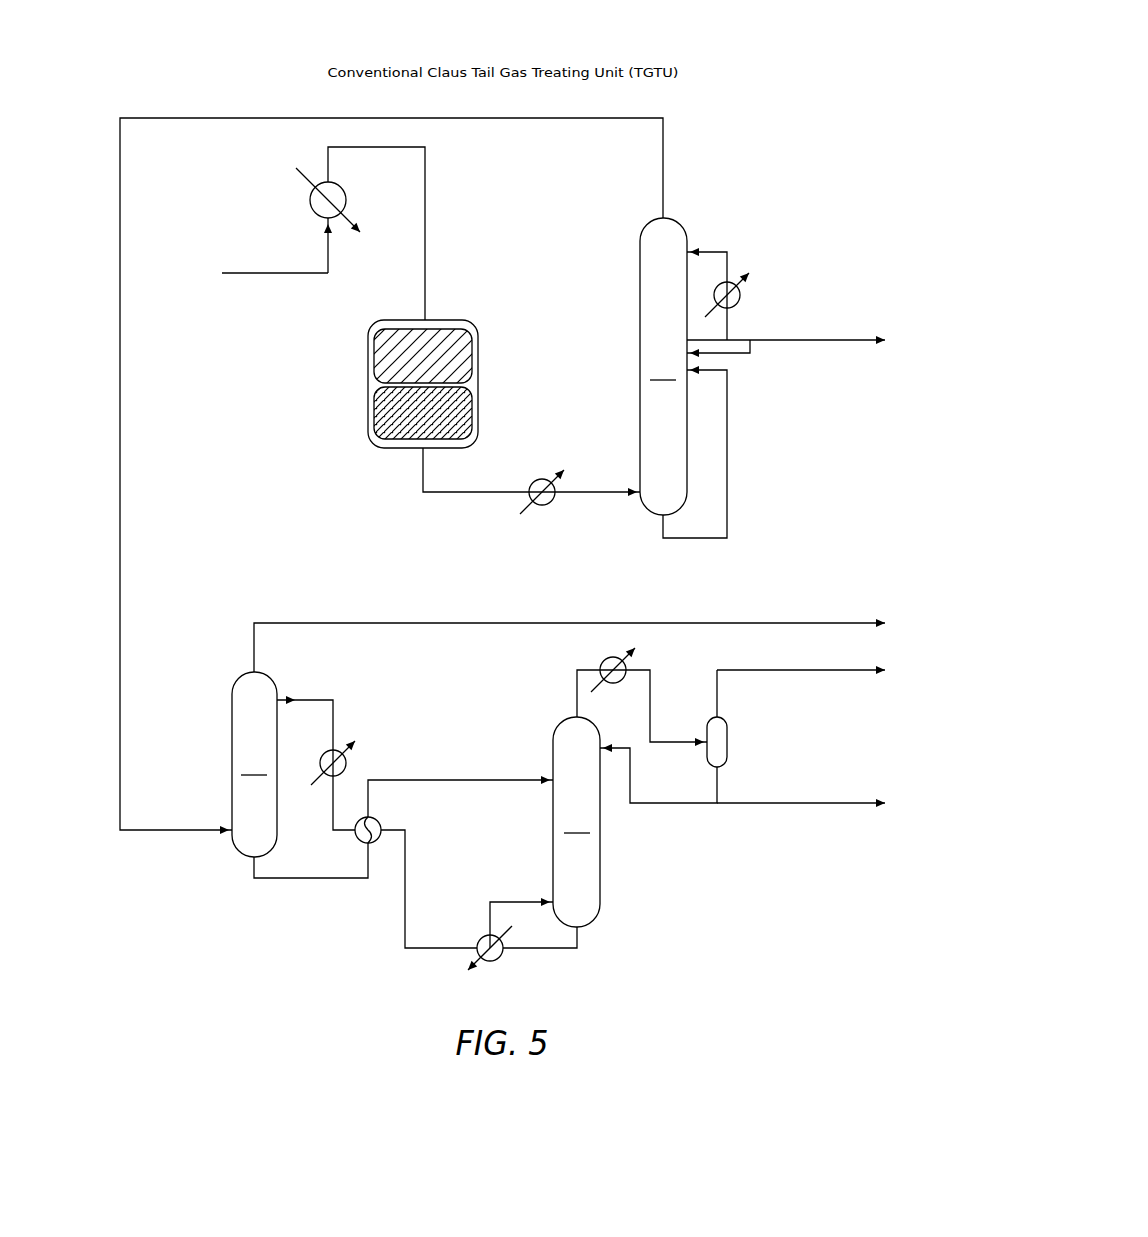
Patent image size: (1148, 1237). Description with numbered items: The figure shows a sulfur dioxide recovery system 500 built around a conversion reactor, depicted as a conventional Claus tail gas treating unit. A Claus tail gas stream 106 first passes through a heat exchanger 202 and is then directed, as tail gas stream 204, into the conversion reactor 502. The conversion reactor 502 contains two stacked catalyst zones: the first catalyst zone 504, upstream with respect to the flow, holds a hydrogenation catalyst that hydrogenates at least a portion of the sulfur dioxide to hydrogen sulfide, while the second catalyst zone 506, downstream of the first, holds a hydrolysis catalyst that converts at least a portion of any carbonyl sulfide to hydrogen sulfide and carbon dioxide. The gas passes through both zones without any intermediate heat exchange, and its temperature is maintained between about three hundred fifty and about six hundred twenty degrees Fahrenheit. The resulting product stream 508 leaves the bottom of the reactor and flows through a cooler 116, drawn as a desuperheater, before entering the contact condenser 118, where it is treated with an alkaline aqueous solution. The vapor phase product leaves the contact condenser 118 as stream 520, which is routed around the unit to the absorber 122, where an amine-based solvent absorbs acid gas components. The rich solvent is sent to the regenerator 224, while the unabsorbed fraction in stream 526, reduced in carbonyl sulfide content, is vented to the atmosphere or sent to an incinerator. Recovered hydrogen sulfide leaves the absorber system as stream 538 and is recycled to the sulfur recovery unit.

The conventional Claus tail gas treating unit 500 is at (730, 15).
The Claus tail gas stream 106 is at (330, 260).
The heat exchanger 202 is at (308, 199).
The tail gas stream 204 is at (427, 190).
The conversion reactor 502 is at (368, 342).
The first catalyst zone 504 is at (479, 355).
The second catalyst zone 506 is at (479, 407).
The product stream 508 is at (423, 497).
The cooler 116 is at (529, 484).
The contact condenser 118 is at (708, 392).
The vapor phase product stream 520 is at (665, 172).
The absorber 122 is at (392, 798).
The regenerator 224 is at (675, 809).
The unabsorbed fraction stream 526 is at (430, 625).
The recovered H2S stream 538 is at (797, 668).